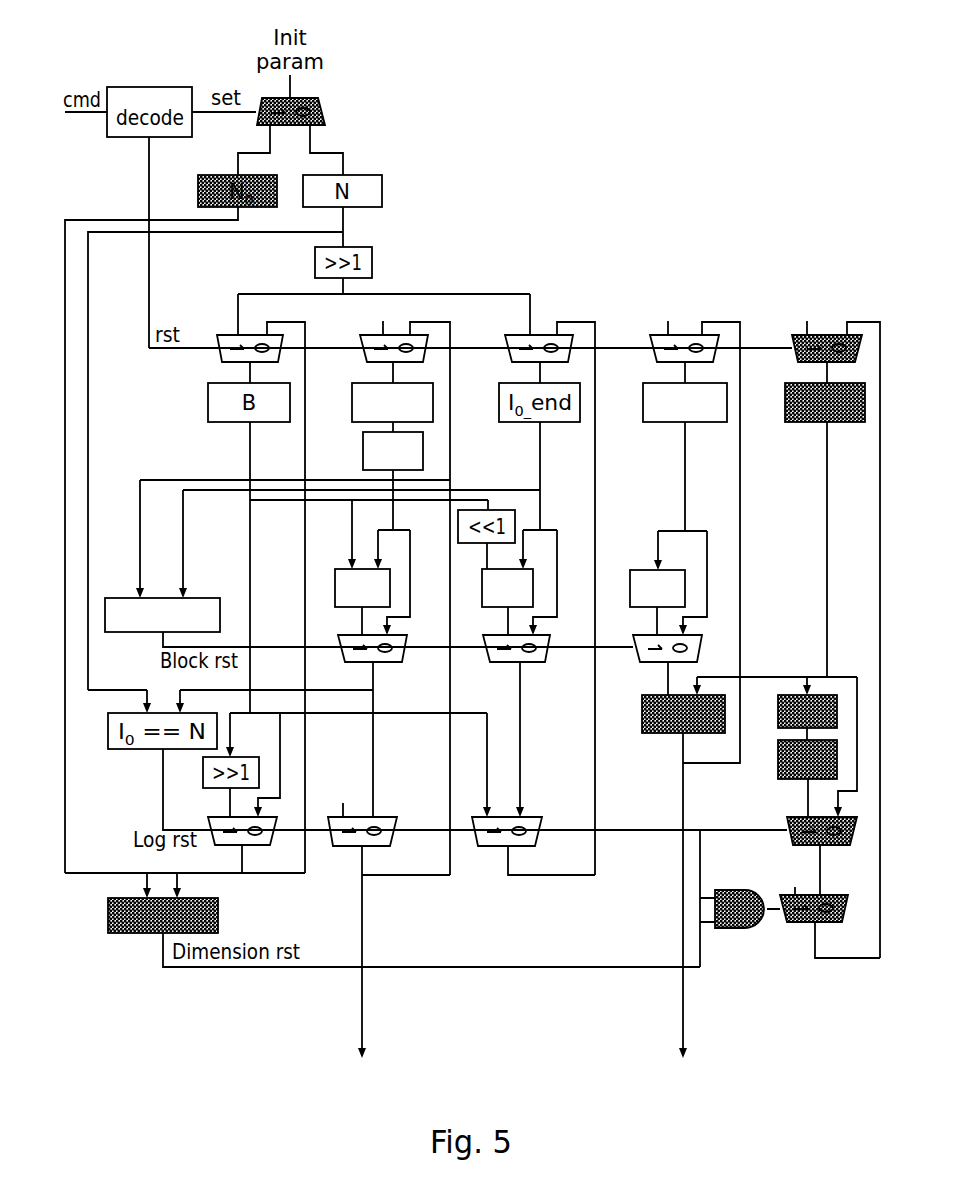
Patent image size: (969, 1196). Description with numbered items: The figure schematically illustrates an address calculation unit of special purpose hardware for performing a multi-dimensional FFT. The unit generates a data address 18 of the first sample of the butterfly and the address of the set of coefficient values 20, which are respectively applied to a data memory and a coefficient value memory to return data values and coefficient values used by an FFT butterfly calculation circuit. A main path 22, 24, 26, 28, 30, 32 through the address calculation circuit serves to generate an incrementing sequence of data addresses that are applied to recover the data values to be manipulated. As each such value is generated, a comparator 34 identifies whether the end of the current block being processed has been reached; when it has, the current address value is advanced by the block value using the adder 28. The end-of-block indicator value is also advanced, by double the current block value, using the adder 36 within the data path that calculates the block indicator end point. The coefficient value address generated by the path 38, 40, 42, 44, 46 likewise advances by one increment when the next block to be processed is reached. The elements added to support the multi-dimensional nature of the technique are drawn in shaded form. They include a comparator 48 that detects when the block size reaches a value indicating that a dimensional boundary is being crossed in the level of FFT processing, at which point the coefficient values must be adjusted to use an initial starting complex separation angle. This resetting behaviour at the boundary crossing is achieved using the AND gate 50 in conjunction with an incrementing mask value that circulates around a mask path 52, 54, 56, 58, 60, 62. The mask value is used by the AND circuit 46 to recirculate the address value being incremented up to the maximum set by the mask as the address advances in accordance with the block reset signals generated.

The data address 18 is at (362, 993).
The address of the set of coefficient values 20 is at (683, 992).
The main path element 22 is at (367, 362).
The main path element 24 is at (352, 397).
The main path element 26 is at (363, 454).
The adder 28 is at (335, 595).
The main path element 30 is at (390, 662).
The main path element 32 is at (393, 817).
The comparator 34 is at (213, 598).
The adder 36 is at (482, 595).
The coefficient address path element 38 is at (653, 359).
The coefficient address path element 40 is at (662, 422).
The coefficient address path element 42 is at (640, 570).
The coefficient address path element 44 is at (636, 651).
The AND circuit 46 is at (660, 733).
The comparator 48 is at (218, 915).
The AND gate 50 is at (750, 890).
The mask path element 52 is at (796, 359).
The mask path element 54 is at (803, 422).
The mask path element 56 is at (790, 695).
The mask path element 58 is at (778, 765).
The mask path element 60 is at (834, 845).
The mask path element 62 is at (848, 908).